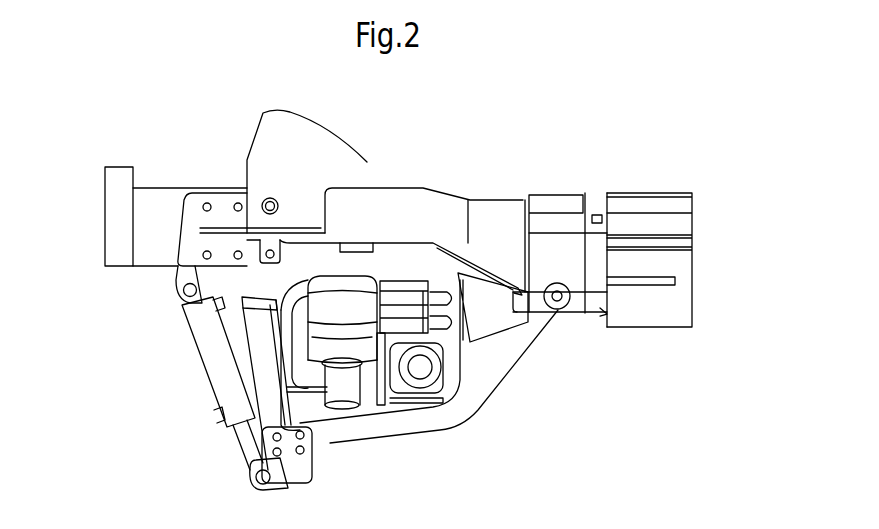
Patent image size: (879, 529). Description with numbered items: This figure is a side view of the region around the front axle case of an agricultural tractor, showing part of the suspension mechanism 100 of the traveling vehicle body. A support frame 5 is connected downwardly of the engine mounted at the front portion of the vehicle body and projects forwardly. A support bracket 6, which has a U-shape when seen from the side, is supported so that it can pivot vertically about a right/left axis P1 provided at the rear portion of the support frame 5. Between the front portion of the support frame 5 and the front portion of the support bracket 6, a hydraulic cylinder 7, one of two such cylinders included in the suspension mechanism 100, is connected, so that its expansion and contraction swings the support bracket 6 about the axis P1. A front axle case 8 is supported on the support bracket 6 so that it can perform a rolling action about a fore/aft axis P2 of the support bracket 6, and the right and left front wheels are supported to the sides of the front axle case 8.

The suspension mechanism 100 is at (192, 433).
The support frame 5 is at (443, 203).
The support bracket 6 is at (472, 408).
The hydraulic cylinder 7 is at (207, 355).
The front axle case 8 is at (350, 285).
The right/left axis P1 is at (563, 310).
The fore/aft axis P2 is at (262, 333).